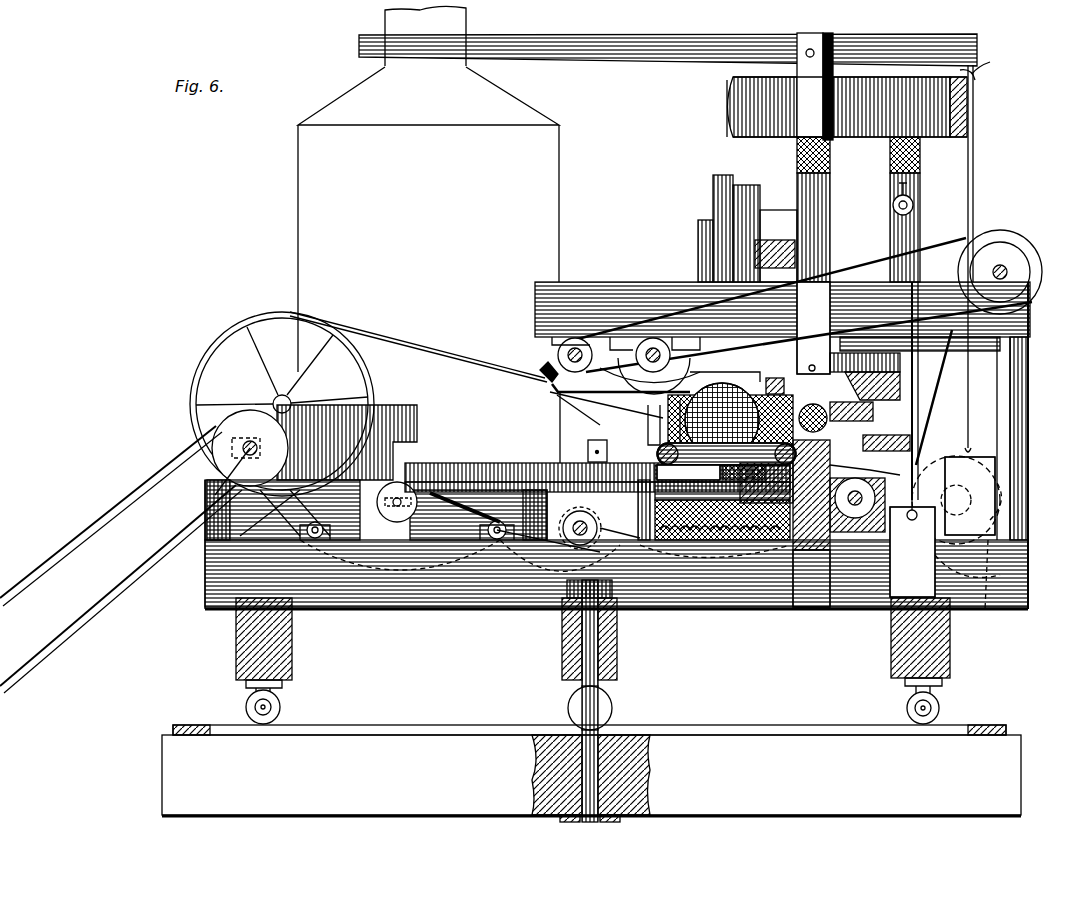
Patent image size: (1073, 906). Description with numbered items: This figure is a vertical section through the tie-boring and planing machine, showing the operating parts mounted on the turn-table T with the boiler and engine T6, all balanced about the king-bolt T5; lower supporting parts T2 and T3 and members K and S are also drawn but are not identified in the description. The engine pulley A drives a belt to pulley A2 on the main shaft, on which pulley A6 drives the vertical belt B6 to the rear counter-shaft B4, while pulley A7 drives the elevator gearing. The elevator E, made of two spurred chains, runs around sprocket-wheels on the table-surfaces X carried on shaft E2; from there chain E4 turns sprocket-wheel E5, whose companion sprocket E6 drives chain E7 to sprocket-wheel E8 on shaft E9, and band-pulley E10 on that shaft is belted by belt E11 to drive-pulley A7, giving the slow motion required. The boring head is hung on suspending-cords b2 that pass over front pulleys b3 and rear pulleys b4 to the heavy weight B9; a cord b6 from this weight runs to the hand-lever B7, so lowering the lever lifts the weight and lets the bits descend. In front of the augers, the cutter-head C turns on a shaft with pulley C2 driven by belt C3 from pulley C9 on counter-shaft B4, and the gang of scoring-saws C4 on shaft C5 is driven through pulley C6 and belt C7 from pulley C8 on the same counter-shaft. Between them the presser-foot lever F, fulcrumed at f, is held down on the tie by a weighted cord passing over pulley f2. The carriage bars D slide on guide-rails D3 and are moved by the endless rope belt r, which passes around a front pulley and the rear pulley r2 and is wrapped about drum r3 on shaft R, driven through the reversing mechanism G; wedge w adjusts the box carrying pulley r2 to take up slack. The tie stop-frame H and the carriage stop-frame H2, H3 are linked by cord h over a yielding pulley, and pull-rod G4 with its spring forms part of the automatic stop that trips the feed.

The engine pulley A is at (266, 322).
The main-shaft pulley A2 is at (985, 612).
The pulley A6 is at (1008, 530).
The drive-pulley A7 is at (967, 562).
The counter-shaft B4 is at (817, 305).
The vertical belt B6 is at (936, 397).
The hand-lever B7 is at (630, 58).
The weight B9 is at (956, 500).
The suspending-cords b2 is at (727, 148).
The front pulleys b3 is at (727, 86).
The rear pulleys b4 is at (977, 76).
The cord b6 is at (990, 54).
The cutter-head C is at (653, 363).
The pulley C2 is at (649, 392).
The belt C3 is at (782, 328).
The scoring-saws C4 is at (543, 364).
The axial shaft C5 is at (576, 338).
The pulley C6 is at (604, 396).
The belt C7 is at (808, 246).
The pulley C8 is at (1006, 240).
The pulley C9 is at (1008, 270).
The sliding bars D is at (730, 421).
The guide-rails D3 is at (424, 464).
The elevator E is at (128, 500).
The shaft E2 is at (212, 494).
The chain E4 is at (283, 525).
The sprocket-wheel E5 is at (320, 547).
The sprocket-wheel E6 is at (301, 546).
The chain E7 is at (428, 580).
The sprocket-wheel E8 is at (506, 541).
The shaft E9 is at (515, 540).
The band-pulley E10 is at (506, 580).
The belt E11 is at (715, 568).
The presser-foot lever F is at (566, 427).
The fulcrum f is at (802, 357).
The pulley f2 is at (912, 200).
The reversing mechanism G is at (766, 483).
The pull-rod G4 is at (698, 532).
The stop-frame H is at (861, 410).
The carriage stop-frame H2 is at (900, 448).
The carriage stop-frame arm H3 is at (865, 477).
The cord h is at (816, 401).
The bracket K is at (588, 456).
The shaft R is at (575, 548).
The rope belt r is at (472, 476).
The pulley r2 is at (856, 520).
The drum r3 is at (614, 550).
The lever S is at (615, 418).
The turn-table T is at (293, 640).
The rail T2 is at (712, 726).
The base T3 is at (591, 775).
The king-bolt T5 is at (598, 660).
The boiler and engine T6 is at (428, 189).
The wedge w is at (811, 523).
The table-surfaces X is at (385, 408).